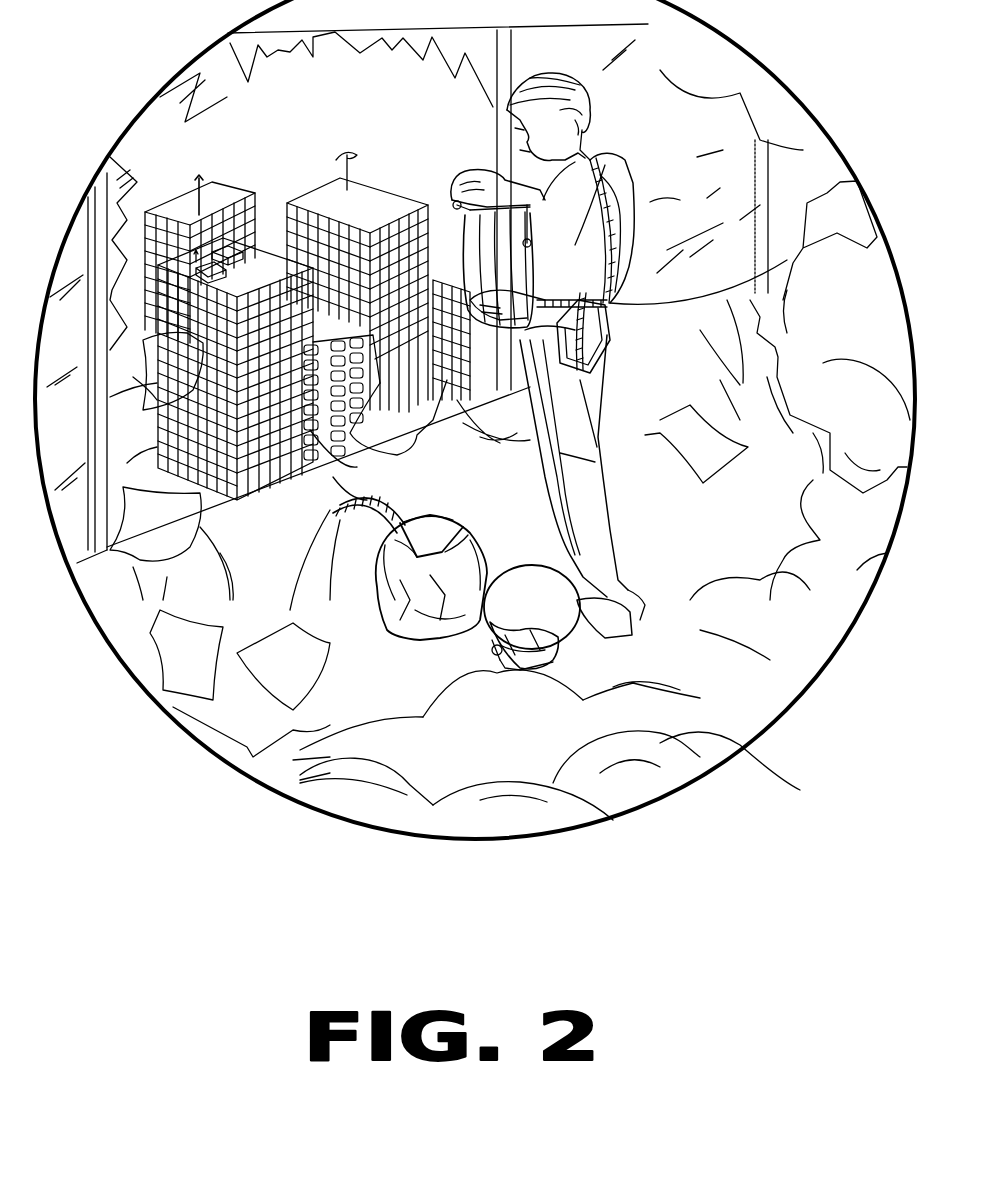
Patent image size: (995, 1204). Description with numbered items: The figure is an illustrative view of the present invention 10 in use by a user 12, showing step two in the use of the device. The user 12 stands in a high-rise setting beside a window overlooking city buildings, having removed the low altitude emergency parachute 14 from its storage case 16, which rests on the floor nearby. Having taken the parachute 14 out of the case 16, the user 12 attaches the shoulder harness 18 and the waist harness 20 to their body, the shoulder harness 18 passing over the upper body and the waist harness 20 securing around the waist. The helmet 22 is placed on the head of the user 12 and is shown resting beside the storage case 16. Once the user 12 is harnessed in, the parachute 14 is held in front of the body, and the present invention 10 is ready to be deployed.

The present invention 10 is at (322, 568).
The user 12 is at (617, 155).
The low altitude emergency parachute 14 is at (468, 240).
The storage case 16 is at (397, 640).
The shoulder harness 18 is at (610, 222).
The waist harness 20 is at (613, 350).
The helmet 22 is at (563, 632).